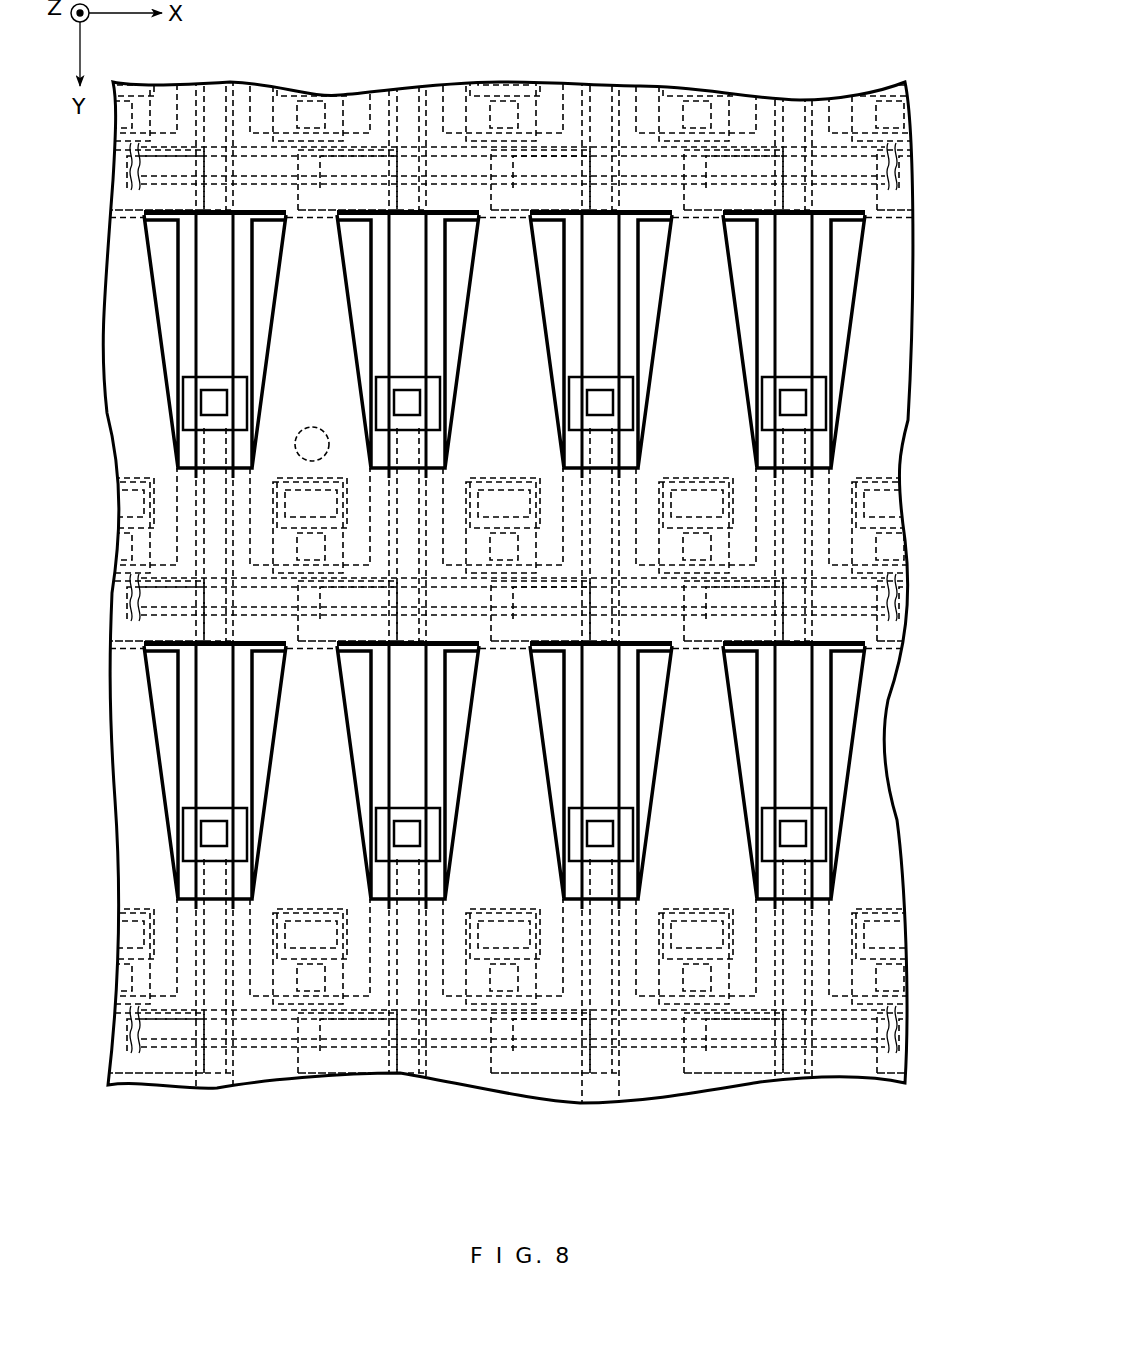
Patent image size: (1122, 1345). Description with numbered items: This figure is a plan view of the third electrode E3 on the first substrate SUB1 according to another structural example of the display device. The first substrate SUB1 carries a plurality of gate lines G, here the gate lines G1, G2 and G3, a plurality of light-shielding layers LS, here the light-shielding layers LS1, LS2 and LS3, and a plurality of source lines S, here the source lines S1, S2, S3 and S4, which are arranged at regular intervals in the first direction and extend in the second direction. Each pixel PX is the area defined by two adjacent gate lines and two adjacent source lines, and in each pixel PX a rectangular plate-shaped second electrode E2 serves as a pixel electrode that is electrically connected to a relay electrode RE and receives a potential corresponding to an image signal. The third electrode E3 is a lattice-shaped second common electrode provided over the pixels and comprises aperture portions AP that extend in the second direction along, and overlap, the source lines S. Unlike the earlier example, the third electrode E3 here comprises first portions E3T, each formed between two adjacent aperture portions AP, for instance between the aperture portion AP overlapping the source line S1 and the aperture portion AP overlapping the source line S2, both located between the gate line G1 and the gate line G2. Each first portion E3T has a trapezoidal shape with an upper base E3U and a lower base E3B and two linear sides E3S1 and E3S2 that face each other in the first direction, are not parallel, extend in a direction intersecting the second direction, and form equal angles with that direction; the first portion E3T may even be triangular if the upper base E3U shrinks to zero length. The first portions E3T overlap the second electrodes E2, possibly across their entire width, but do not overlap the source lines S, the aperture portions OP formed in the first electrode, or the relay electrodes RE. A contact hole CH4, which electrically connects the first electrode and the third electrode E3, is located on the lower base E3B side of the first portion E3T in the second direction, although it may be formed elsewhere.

The first substrate SUB1 is at (924, 104).
The pixel PX is at (245, 198).
The third electrode E3 is at (897, 447).
The first portion E3T is at (302, 262).
The upper base E3U is at (330, 207).
The lower base E3B is at (262, 470).
The side E3S1 is at (273, 292).
The side E3S2 is at (350, 318).
The second electrode E2 is at (250, 348).
The aperture portion AP is at (166, 386).
The contact hole CH4 is at (288, 449).
The aperture portion OP is at (273, 510).
The relay electrode RE is at (285, 562).
The gate line G is at (547, 621).
The gate line G1 is at (885, 223).
The gate line G2 is at (913, 682).
The gate line G3 is at (831, 1028).
The light-shielding layer LS is at (538, 648).
The light-shielding layer LS1 is at (525, 213).
The light-shielding layer LS2 is at (538, 655).
The light-shielding layer LS3 is at (870, 1050).
The source line S is at (500, 672).
The source line S1 is at (210, 1083).
The source line S2 is at (402, 1080).
The source line S3 is at (600, 1097).
The source line S4 is at (785, 1083).